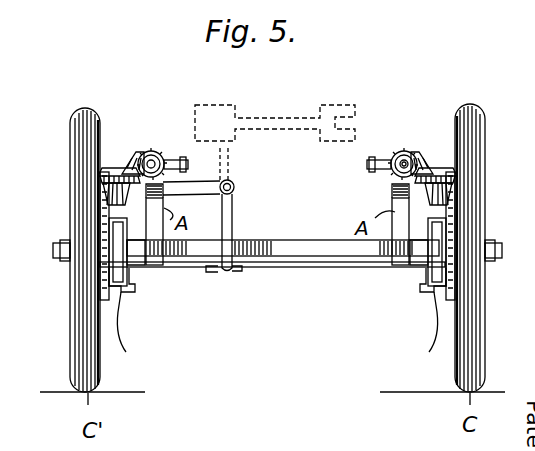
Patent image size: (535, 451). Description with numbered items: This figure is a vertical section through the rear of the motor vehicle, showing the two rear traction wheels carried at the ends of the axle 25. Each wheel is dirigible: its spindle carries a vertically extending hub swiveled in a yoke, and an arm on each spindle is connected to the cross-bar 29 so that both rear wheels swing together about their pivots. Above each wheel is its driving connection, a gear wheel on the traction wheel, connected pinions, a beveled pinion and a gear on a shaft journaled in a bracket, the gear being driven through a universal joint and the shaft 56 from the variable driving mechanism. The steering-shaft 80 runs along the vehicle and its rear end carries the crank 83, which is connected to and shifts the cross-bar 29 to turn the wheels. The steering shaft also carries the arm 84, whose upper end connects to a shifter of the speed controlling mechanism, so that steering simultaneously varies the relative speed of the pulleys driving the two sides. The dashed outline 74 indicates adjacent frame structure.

The axle 25 is at (280, 246).
The cross-bar 29 is at (294, 268).
The shaft 56 is at (398, 168).
The frame member 74 is at (275, 133).
The steering-shaft 80 is at (235, 186).
The crank 83 is at (233, 217).
The arm 84 is at (230, 170).